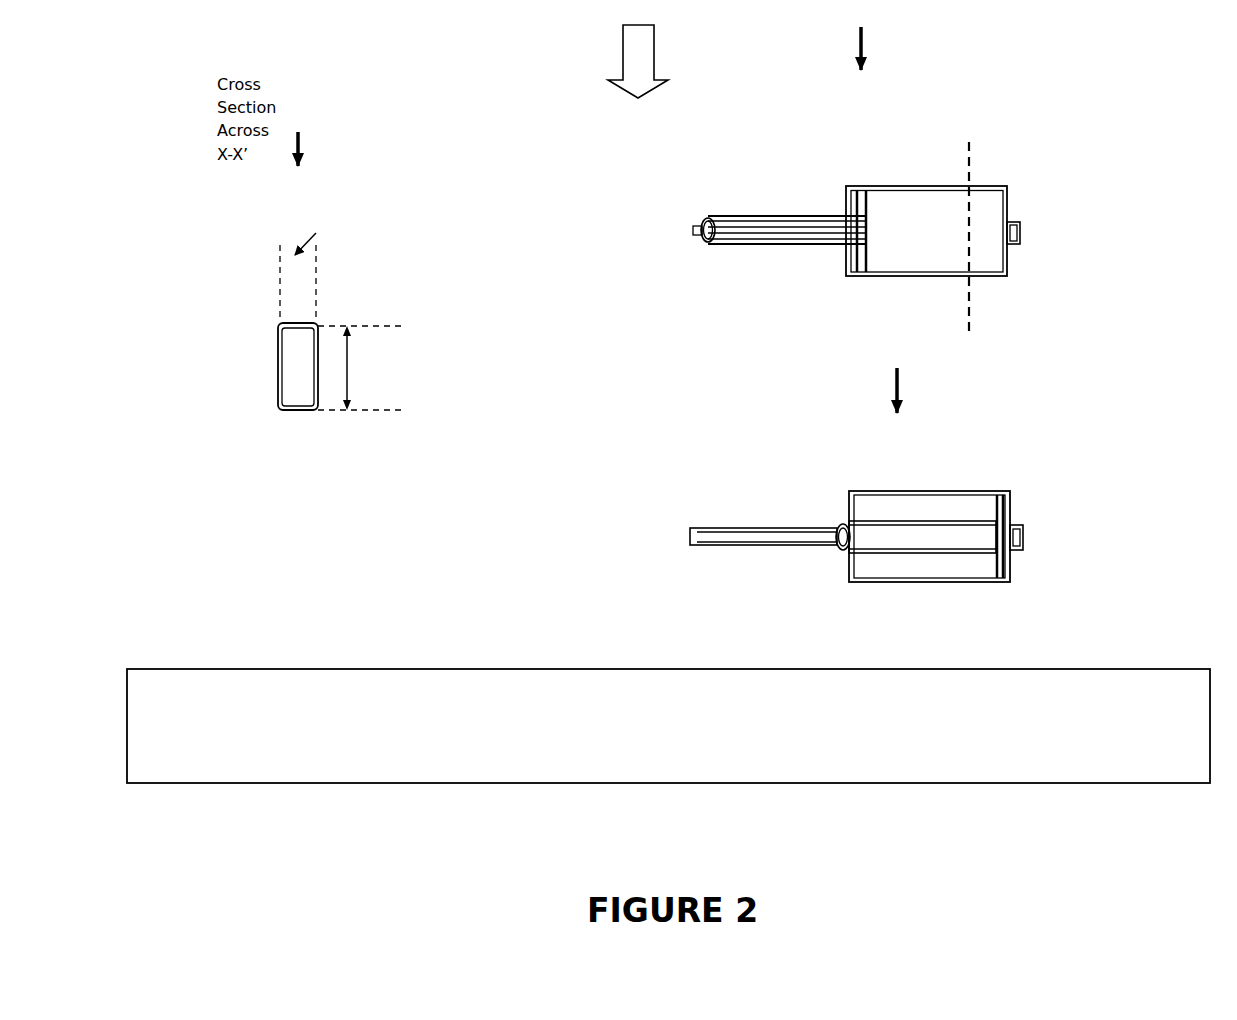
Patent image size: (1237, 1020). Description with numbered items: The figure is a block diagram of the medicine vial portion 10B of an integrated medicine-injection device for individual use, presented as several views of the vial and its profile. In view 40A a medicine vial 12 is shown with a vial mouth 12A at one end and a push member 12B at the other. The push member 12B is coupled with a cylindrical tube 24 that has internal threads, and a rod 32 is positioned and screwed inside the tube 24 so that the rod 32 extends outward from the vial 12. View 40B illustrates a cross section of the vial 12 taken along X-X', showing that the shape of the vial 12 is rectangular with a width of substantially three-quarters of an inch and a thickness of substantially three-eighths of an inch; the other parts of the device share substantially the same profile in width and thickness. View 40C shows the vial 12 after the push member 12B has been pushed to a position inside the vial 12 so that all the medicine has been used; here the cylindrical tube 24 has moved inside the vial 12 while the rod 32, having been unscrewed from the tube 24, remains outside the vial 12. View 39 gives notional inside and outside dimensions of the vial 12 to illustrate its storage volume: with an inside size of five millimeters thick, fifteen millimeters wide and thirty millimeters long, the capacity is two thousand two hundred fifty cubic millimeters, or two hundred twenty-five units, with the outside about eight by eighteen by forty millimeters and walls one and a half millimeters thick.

The vial sub-assembly 10B is at (666, 50).
The medicine vial 12 is at (280, 376).
The vial mouth 12A is at (1020, 220).
The push member 12B is at (863, 192).
The cylindrical tube 24 is at (778, 209).
The rod 32 is at (691, 230).
The dimensions view 39 is at (441, 660).
The vial view 40A is at (882, 42).
The cross section view 40B is at (304, 138).
The pushed-in view 40C is at (900, 378).